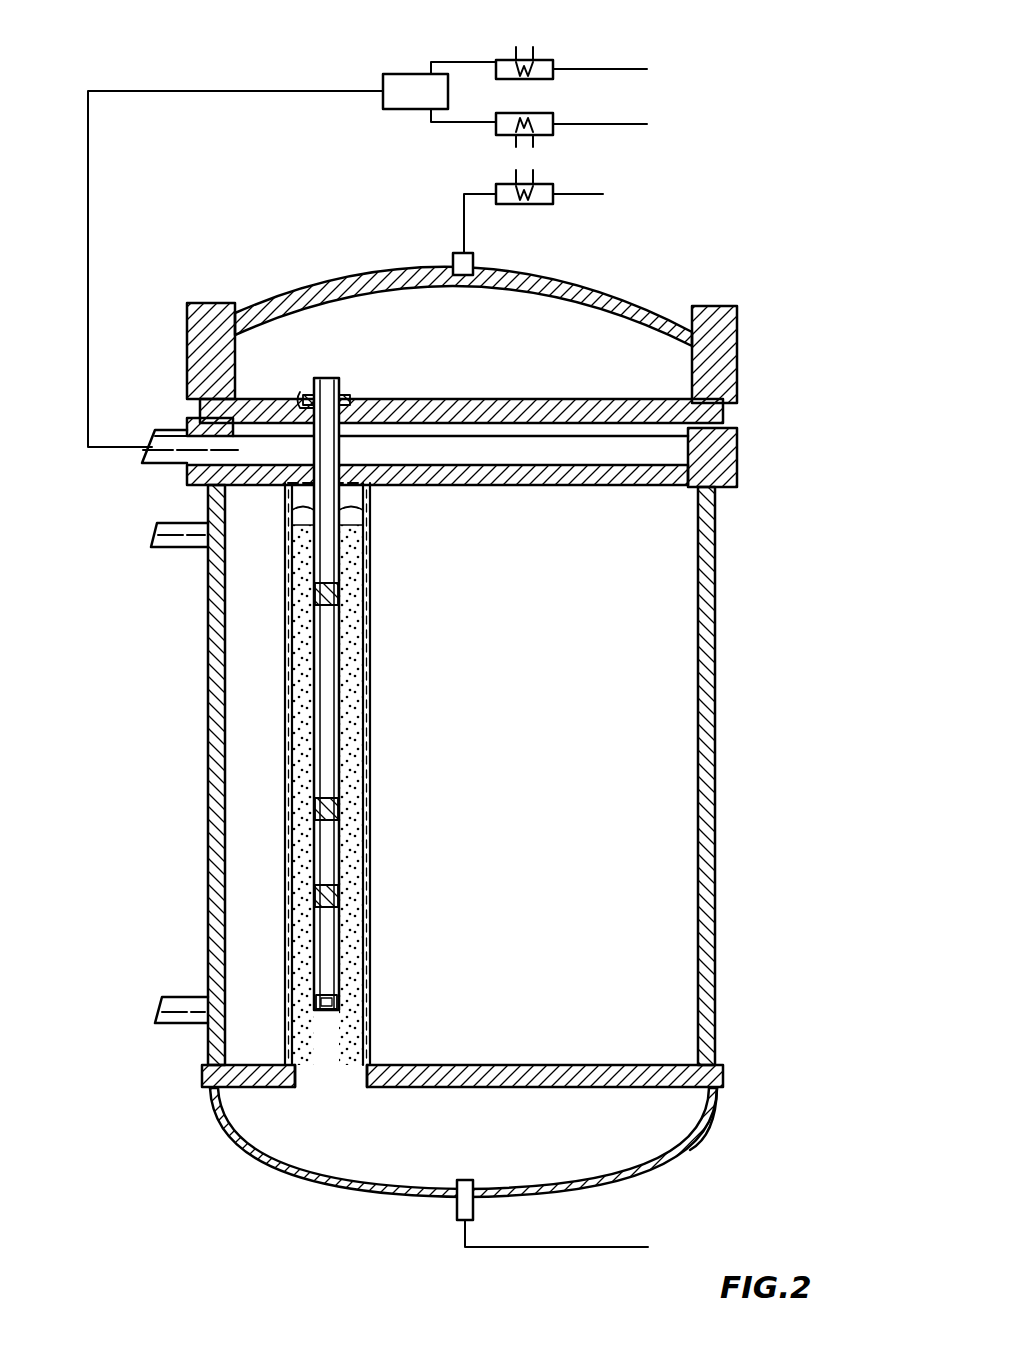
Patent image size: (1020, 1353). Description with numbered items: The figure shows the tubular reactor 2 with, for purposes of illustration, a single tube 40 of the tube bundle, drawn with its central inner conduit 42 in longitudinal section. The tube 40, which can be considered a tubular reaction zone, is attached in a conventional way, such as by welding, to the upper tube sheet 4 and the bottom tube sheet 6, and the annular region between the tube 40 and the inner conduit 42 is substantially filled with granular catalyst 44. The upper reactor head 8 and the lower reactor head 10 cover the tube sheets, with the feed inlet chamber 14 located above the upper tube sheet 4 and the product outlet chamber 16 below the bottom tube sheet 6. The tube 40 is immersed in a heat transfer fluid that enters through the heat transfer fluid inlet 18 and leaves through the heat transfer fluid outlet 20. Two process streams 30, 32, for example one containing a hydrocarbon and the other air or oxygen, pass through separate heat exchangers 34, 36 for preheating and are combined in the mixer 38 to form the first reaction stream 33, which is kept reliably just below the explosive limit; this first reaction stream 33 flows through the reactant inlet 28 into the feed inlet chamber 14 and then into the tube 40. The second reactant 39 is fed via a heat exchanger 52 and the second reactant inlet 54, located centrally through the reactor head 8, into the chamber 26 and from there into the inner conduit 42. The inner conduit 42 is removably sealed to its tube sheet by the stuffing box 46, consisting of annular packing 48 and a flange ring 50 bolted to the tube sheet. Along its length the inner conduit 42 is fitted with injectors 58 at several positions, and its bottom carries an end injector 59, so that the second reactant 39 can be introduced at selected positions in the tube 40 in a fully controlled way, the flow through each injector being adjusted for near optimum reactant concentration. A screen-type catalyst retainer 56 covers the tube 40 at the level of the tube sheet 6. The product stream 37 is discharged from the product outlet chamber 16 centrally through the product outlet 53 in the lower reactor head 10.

The reactor 2 is at (723, 707).
The upper tube sheet 4 is at (615, 485).
The bottom tube sheet 6 is at (565, 1063).
The upper reactor head 8 is at (664, 312).
The lower reactor head 10 is at (582, 1185).
The feed inlet chamber 14 is at (670, 453).
The product outlet chamber 16 is at (663, 1110).
The heat transfer fluid inlet 18 is at (203, 997).
The heat transfer fluid outlet 20 is at (186, 548).
The chamber 26 is at (596, 313).
The reactant inlet 28 is at (162, 465).
The process stream 30 is at (628, 69).
The second process stream 32 is at (625, 124).
The first reaction stream 33 is at (103, 420).
The heat exchanger 34 is at (550, 60).
The heat exchanger 36 is at (553, 117).
The product stream 37 is at (530, 1247).
The mixer 38 is at (413, 83).
The second reactant 39 is at (603, 194).
The tube 40 is at (368, 853).
The inner conduit 42 is at (365, 510).
The catalyst bed 44 is at (360, 700).
The stuffing box 46 is at (344, 398).
The annular packing 48 is at (295, 398).
The flange ring 50 is at (306, 392).
The heat exchanger 52 is at (505, 184).
The product outlet 53 is at (440, 1233).
The second reactant inlet 54 is at (473, 258).
The catalyst retainer 56 is at (300, 1073).
The injectors 58 is at (370, 592).
The end injector 59 is at (350, 988).